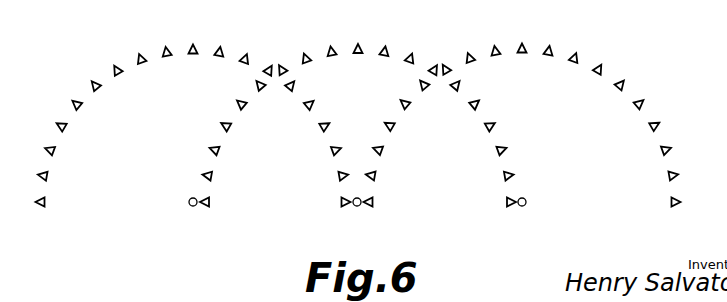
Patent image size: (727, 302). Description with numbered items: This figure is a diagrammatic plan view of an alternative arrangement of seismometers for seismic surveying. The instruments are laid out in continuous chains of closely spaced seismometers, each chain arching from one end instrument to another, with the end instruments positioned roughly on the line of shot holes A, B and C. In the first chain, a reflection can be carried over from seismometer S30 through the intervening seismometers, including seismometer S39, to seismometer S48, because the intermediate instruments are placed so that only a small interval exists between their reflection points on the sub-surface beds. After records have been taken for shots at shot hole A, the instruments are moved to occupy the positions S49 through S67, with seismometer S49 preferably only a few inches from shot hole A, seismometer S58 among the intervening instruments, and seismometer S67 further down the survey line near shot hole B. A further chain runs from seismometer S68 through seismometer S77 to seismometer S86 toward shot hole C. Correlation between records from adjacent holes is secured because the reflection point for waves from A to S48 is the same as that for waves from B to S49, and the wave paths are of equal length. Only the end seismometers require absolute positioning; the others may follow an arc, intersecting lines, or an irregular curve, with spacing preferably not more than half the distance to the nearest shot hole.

The seismometer S30 is at (41, 207).
The seismometer S39 is at (194, 45).
The seismometer S48 is at (345, 207).
The seismometer S49 is at (207, 207).
The seismometer S58 is at (363, 37).
The seismometer S67 is at (508, 207).
The seismometer S68 is at (371, 207).
The seismometer S77 is at (524, 45).
The seismometer S86 is at (676, 207).
The shot hole A is at (193, 206).
The shot hole B is at (357, 206).
The shot hole C is at (522, 206).